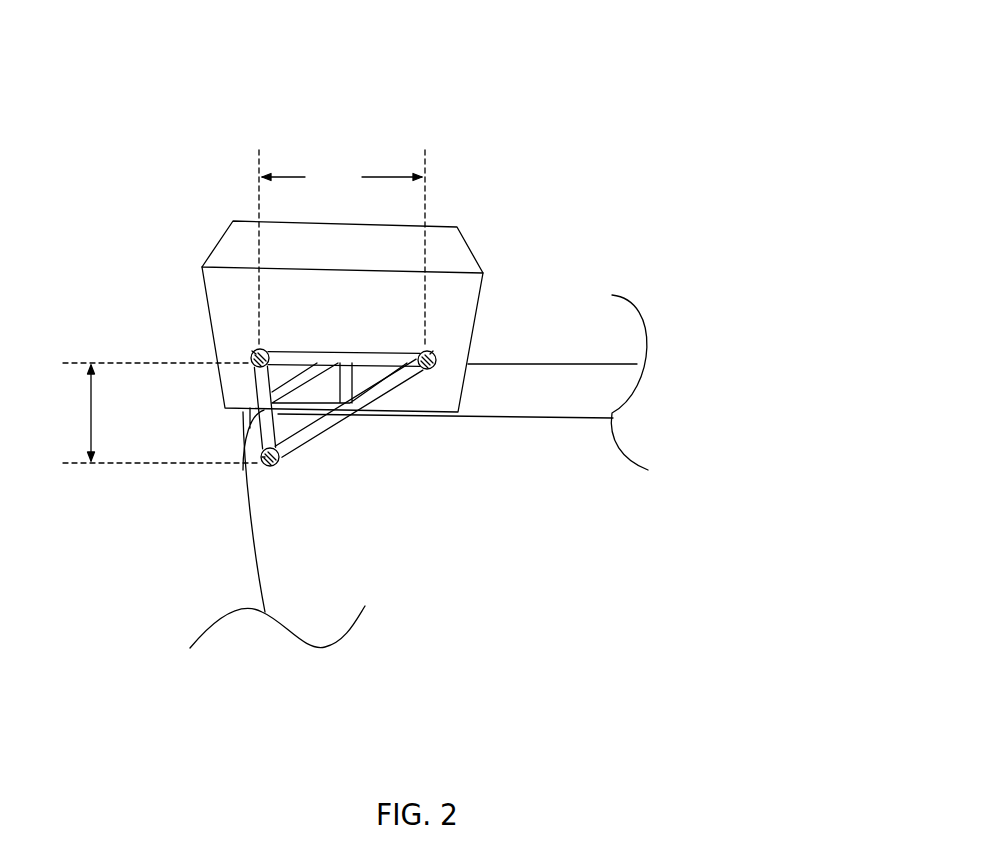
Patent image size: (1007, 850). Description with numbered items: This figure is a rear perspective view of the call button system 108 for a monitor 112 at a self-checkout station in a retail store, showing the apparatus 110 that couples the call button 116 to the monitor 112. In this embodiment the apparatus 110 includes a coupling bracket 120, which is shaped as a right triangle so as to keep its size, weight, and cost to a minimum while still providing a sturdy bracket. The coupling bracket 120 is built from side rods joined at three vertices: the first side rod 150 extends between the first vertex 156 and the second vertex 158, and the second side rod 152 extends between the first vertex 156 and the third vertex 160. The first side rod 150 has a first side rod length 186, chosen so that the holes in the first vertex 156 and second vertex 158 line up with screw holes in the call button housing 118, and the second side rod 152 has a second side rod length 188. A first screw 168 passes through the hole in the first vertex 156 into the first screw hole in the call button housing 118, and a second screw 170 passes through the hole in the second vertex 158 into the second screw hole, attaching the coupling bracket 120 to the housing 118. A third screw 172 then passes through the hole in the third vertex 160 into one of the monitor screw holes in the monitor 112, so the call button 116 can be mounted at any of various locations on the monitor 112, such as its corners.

The call button system 108 is at (634, 84).
The apparatus 110 is at (318, 398).
The monitor 112 is at (558, 377).
The call button 116 is at (405, 295).
The call button housing 118 is at (453, 247).
The coupling bracket 120 is at (300, 437).
The first side rod 150 is at (330, 349).
The second side rod 152 is at (255, 380).
The first vertex 156 is at (252, 351).
The second vertex 158 is at (433, 351).
The third vertex 160 is at (262, 457).
The first screw 168 is at (252, 355).
The second screw 170 is at (421, 351).
The third screw 172 is at (268, 467).
The first side rod length 186 is at (342, 177).
The second side rod length 188 is at (87, 413).